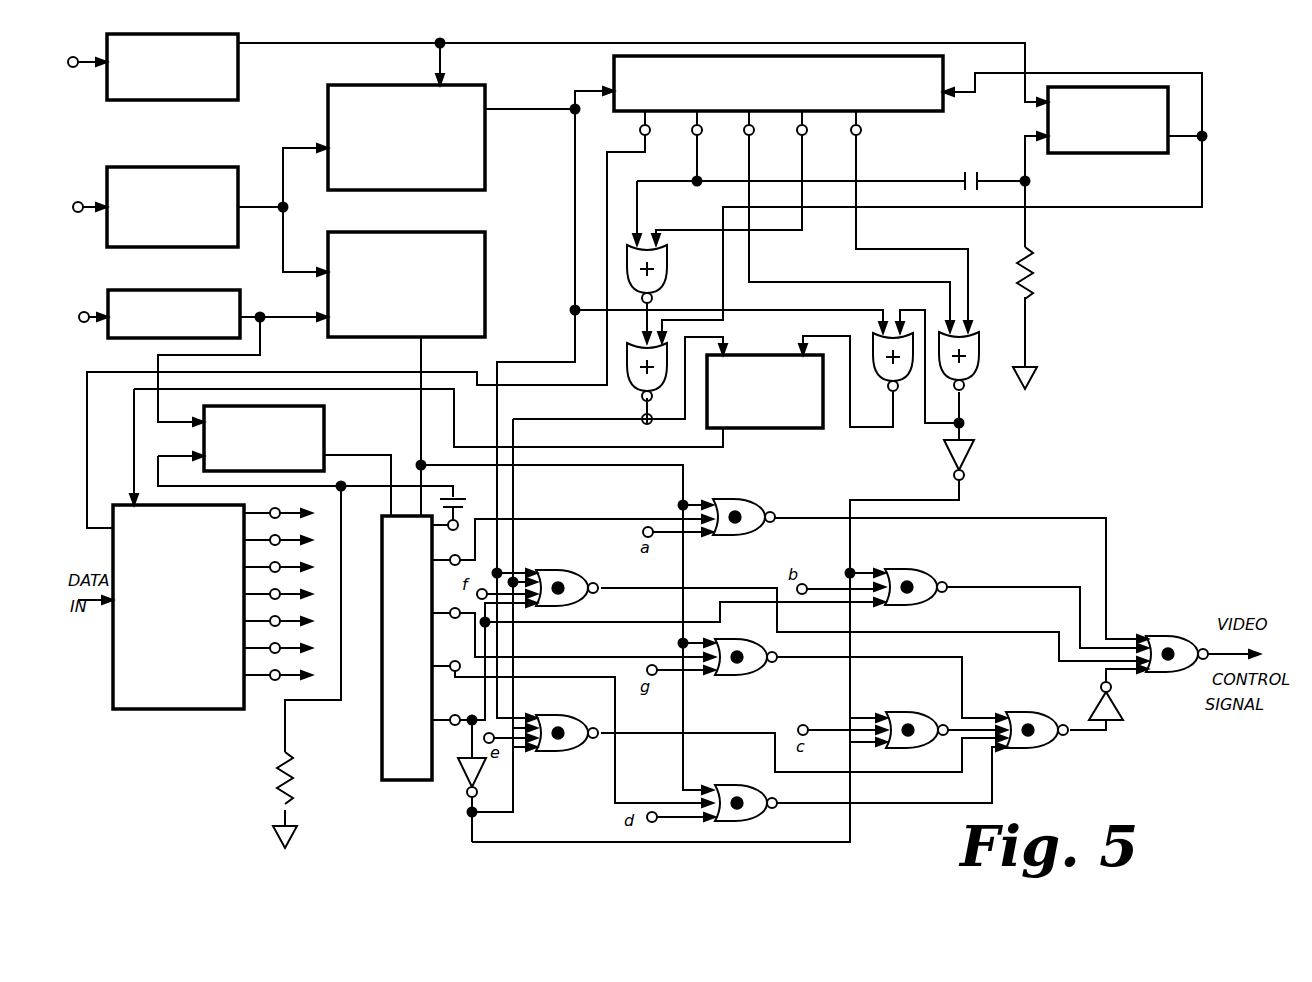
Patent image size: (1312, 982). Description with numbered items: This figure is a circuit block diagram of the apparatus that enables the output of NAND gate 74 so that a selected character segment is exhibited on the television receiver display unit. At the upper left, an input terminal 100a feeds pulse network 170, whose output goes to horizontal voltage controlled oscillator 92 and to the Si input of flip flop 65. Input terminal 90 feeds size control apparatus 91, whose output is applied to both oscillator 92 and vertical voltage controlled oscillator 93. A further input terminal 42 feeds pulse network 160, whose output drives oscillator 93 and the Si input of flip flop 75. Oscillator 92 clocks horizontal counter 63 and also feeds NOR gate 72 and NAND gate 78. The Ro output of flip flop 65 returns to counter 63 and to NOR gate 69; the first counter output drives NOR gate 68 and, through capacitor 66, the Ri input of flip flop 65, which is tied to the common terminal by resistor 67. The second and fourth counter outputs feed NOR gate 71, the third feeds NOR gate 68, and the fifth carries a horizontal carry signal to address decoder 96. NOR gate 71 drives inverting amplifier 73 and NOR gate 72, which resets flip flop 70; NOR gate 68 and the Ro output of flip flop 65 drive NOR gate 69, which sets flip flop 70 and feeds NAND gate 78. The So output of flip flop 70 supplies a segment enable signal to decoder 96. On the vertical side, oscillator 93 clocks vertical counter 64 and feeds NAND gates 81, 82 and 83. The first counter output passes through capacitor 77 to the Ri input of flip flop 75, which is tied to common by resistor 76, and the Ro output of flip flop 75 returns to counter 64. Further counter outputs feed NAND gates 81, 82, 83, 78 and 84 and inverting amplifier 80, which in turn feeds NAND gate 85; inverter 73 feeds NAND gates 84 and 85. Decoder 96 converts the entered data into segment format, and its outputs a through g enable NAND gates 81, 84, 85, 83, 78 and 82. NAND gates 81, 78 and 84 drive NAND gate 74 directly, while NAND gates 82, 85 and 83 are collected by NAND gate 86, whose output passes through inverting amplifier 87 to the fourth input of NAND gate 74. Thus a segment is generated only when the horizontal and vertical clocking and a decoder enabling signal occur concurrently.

The input terminal 100a is at (70, 67).
The pulse network 170 is at (172, 100).
The input terminal 90 is at (78, 202).
The size control apparatus 91 is at (165, 167).
The input terminal 42 is at (82, 312).
The pulse network 160 is at (150, 290).
The horizontal voltage controlled oscillator 92 is at (355, 85).
The vertical voltage controlled oscillator 93 is at (460, 232).
The horizontal counter 63 is at (765, 56).
The flip flop 65 is at (1095, 153).
The capacitor 66 is at (963, 172).
The resistor 67 is at (1033, 282).
The logic NOR gate 68 is at (667, 272).
The logic NOR gate 69 is at (636, 385).
The flip flop 70 is at (770, 428).
The logic NOR gate 71 is at (975, 382).
The logic NOR gate 72 is at (880, 380).
The inverting amplifier 73 is at (976, 452).
The flip flop 75 is at (324, 410).
The capacitor 77 is at (460, 497).
The vertical counter 64 is at (382, 712).
The address decoder 96 is at (185, 709).
The resistor 76 is at (280, 780).
The inverting amplifier 80 is at (468, 778).
The logic NAND gate 78 is at (568, 570).
The logic NAND gate 81 is at (745, 499).
The logic NAND gate 82 is at (735, 675).
The logic NAND gate 83 is at (746, 803).
The logic NAND gate 84 is at (917, 569).
The logic NAND gate 85 is at (900, 712).
The logic NAND gate 86 is at (1020, 712).
The inverting amplifier 87 is at (1123, 708).
The logic NAND gate 74 is at (1165, 636).